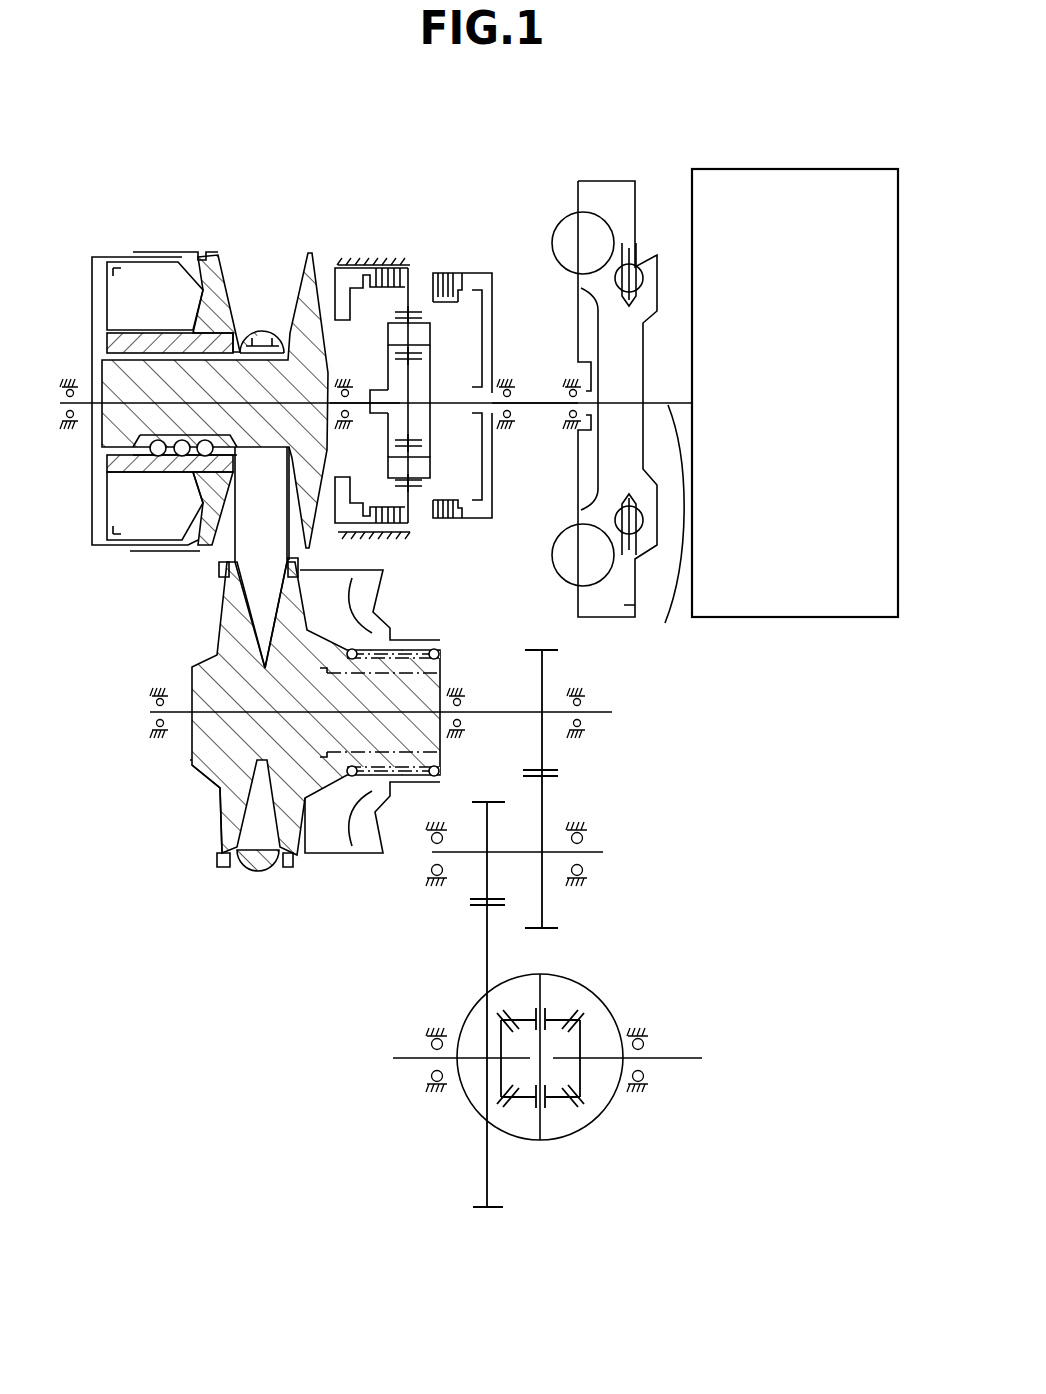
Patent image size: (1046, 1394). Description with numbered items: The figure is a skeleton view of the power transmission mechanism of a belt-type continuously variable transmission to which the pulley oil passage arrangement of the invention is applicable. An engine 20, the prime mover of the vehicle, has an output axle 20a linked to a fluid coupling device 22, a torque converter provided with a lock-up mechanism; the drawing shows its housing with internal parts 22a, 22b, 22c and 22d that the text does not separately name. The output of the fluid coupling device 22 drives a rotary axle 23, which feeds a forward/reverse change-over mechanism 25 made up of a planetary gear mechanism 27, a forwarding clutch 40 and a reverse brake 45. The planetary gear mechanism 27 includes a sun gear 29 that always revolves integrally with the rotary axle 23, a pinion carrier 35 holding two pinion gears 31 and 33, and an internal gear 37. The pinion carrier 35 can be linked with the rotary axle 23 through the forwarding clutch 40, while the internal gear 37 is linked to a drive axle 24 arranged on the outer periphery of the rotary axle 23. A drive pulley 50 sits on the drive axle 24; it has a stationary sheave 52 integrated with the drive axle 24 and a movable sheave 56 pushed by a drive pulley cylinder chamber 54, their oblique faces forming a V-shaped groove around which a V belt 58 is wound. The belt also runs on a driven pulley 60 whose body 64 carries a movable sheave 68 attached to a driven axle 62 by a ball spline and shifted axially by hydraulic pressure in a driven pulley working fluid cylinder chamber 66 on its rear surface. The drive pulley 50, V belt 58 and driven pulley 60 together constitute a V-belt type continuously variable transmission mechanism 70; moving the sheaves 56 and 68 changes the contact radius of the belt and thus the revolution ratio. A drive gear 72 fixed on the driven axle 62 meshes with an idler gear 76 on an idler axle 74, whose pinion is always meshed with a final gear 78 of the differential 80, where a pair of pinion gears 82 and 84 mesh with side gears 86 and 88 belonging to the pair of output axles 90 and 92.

The engine 20 is at (770, 169).
The output axle 20a is at (662, 532).
The fluid coupling device 22 is at (598, 180).
The chain 22a is at (608, 463).
The sprocket 22b is at (562, 550).
The idler sprocket 22c is at (580, 603).
The chain tensioner 22d is at (628, 192).
The rotary axle 23 is at (535, 393).
The drive axle 24 is at (355, 397).
The forward/reverse change-over mechanism 25 is at (390, 227).
The planetary gear mechanism 27 is at (451, 327).
The sun gear 29 is at (412, 415).
The pinion gear 31 is at (417, 443).
The pinion gear 33 is at (417, 485).
The pinion carrier 35 is at (388, 425).
The internal gear 37 is at (414, 498).
The forwarding clutch 40 is at (452, 272).
The reverse brake 45 is at (418, 260).
The drive pulley 50 is at (306, 232).
The stationary sheave 52 is at (312, 258).
The drive pulley cylinder chamber 54 is at (132, 283).
The movable sheave 56 is at (213, 253).
The V belt 58 is at (220, 557).
The driven pulley 60 is at (240, 884).
The driven axle 62 is at (505, 714).
The gear body 64 is at (225, 805).
The driven pulley working fluid cylinder chamber 66 is at (330, 840).
The movable sheave 68 is at (290, 868).
The V-belt type continuously variable transmission mechanism 70 is at (197, 630).
The drive gear 72 is at (537, 646).
The idler axle 74 is at (548, 850).
The idler gear 76 is at (487, 878).
The final gear 78 is at (497, 1208).
The differential 80 is at (621, 983).
The pinion gear 82 is at (560, 1097).
The pinion gear 84 is at (521, 1020).
The side gear 86 is at (503, 1082).
The side gear 88 is at (585, 1030).
The output axle 90 is at (402, 1058).
The output axle 92 is at (687, 1058).